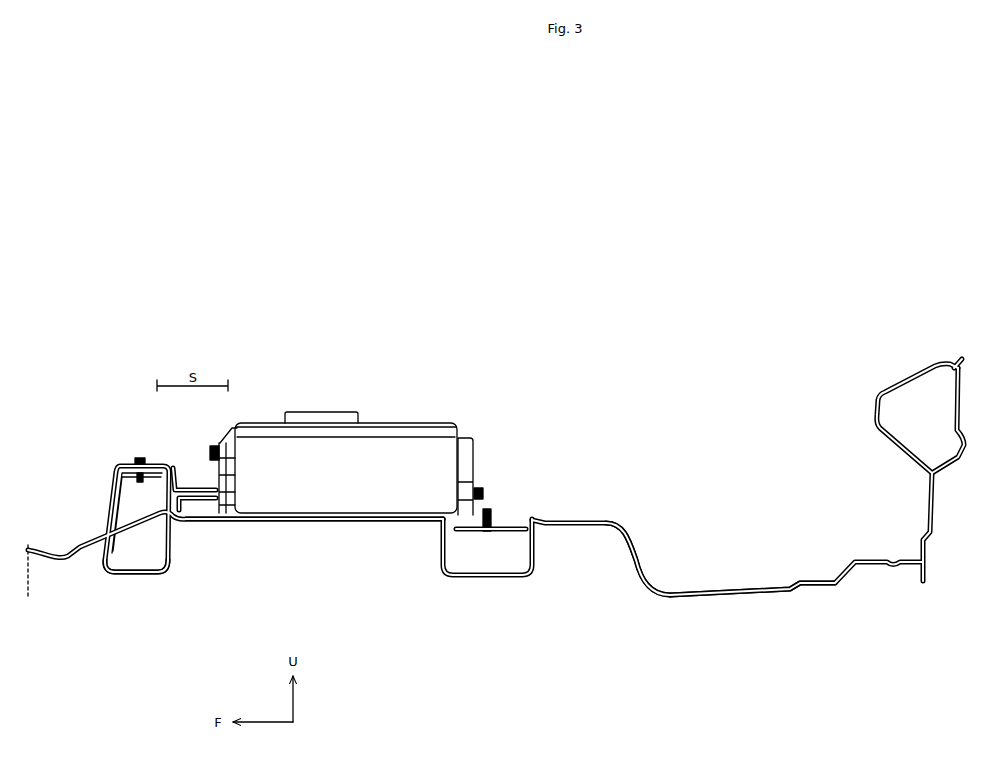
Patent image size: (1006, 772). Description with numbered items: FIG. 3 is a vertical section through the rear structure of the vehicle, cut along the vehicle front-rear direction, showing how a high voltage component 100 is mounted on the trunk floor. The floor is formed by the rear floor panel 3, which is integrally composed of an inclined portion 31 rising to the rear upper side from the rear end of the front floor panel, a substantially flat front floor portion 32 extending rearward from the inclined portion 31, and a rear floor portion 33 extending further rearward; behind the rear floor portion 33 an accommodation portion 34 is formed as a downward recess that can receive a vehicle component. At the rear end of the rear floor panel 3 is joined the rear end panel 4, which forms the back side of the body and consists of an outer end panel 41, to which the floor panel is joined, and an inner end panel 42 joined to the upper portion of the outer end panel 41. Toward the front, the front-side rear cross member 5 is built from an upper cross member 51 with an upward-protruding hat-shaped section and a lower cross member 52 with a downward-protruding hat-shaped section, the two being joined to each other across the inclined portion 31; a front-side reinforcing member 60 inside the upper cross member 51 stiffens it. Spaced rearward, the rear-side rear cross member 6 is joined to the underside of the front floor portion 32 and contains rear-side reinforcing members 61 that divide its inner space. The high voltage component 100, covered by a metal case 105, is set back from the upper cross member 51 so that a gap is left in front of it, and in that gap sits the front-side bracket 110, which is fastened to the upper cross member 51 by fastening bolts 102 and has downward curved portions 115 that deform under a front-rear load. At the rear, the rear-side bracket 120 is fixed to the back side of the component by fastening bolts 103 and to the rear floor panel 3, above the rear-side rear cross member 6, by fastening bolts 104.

The rear floor panel 3 is at (622, 509).
The inclined portion 31 is at (138, 534).
The front floor portion 32 is at (344, 525).
The rear floor portion 33 is at (645, 537).
The accommodation portion 34 is at (745, 561).
The rear end panel 4 is at (939, 506).
The outer end panel 41 is at (963, 415).
The inner end panel 42 is at (880, 421).
The front-side rear cross member 5 is at (113, 528).
The upper cross member 51 is at (102, 503).
The lower cross member 52 is at (135, 577).
The front-side reinforcing member 60 is at (114, 477).
The rear-side rear cross member 6 is at (458, 580).
The rear-side reinforcing member 61 is at (511, 535).
The high voltage component 100 is at (346, 445).
The fastening bolt 102 is at (139, 459).
The fastening bolt 103 is at (487, 495).
The fastening bolt 104 is at (492, 512).
The metal case 105 is at (266, 439).
The front-side bracket 110 is at (160, 462).
The downward curved portion 115 is at (237, 478).
The rear-side bracket 120 is at (479, 481).